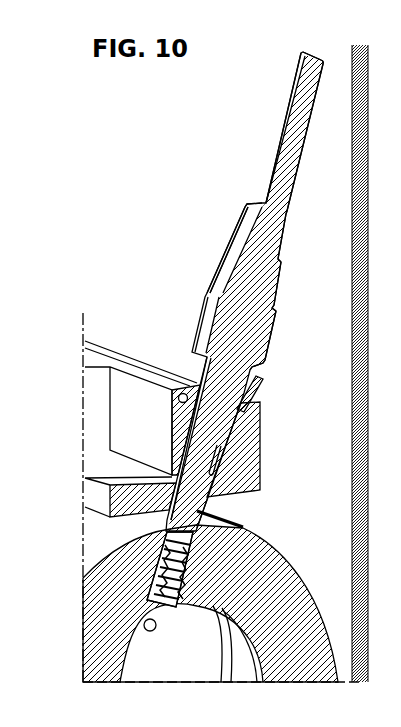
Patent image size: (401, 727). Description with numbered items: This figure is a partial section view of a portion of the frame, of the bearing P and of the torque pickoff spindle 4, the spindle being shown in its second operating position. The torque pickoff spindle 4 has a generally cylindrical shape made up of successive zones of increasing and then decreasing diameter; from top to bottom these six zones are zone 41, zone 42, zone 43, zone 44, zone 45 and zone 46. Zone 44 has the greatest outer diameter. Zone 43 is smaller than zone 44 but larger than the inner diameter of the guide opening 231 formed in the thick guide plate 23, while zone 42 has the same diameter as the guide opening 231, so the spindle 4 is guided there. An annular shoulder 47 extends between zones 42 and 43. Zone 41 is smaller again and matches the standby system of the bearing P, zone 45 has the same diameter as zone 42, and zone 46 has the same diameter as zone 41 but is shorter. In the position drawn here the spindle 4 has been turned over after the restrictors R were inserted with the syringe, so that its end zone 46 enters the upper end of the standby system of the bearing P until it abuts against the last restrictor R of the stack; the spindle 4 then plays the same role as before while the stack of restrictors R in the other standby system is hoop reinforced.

The torque pickoff spindle 4 is at (158, 185).
The zone 41 is at (292, 138).
The zone 42 is at (268, 240).
The zone 43 is at (258, 282).
The zone 44 is at (250, 340).
The zone 45 is at (217, 417).
The zone 46 is at (193, 500).
The annular shoulder 47 is at (238, 243).
The guide plate 23 is at (108, 468).
The guide opening 231 is at (213, 477).
The bearing P is at (300, 635).
The restrictor R is at (150, 592).